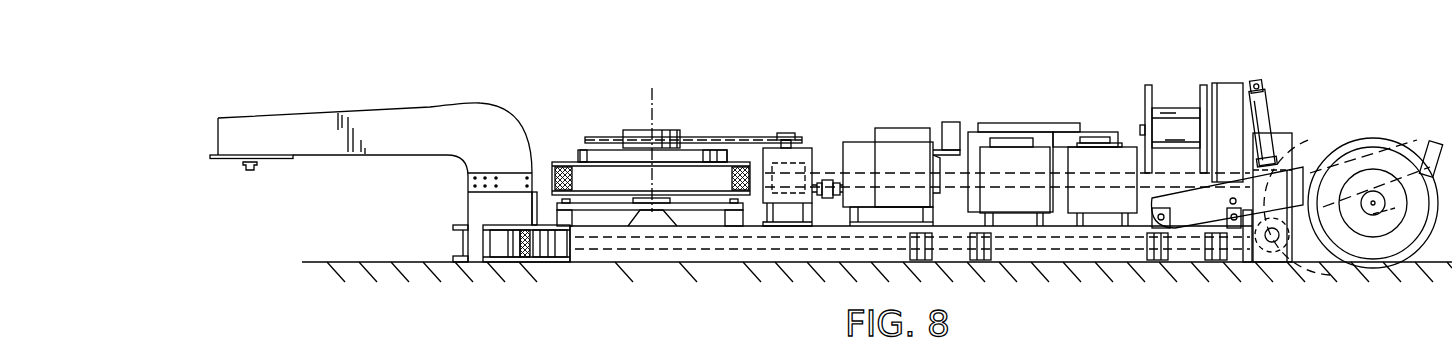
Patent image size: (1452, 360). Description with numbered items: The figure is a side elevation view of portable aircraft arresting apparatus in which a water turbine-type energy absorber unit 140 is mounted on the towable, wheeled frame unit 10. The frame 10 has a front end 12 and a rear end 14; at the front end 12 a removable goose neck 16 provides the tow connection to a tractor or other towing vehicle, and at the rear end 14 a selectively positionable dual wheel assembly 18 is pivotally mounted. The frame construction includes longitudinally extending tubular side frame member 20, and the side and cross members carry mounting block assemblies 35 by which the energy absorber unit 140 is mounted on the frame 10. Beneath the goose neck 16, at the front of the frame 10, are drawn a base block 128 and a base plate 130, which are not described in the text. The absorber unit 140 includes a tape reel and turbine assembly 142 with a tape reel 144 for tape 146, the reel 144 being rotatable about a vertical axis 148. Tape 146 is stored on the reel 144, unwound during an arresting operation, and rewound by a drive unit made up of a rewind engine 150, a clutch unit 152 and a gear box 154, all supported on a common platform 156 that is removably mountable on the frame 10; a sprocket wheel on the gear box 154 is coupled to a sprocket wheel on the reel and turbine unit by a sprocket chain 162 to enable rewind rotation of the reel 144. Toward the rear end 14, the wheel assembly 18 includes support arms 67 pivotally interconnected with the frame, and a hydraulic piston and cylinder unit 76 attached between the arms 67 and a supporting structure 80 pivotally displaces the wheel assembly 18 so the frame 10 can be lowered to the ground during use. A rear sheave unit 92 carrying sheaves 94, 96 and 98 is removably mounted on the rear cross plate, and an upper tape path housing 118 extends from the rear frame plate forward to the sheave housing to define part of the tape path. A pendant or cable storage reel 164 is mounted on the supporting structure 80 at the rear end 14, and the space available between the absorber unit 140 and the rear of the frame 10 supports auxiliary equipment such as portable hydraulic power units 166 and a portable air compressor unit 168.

The towable frame unit 10 is at (911, 164).
The front end 12 is at (523, 107).
The rear end 14 is at (1202, 91).
The goose neck 16 is at (388, 110).
The dual wheel assembly 18 is at (1379, 102).
The side frame member 20 is at (729, 255).
The mounting block assemblies 35 is at (587, 222).
The support arms 67 is at (1422, 150).
The hydraulic piston and cylinder unit 76 is at (1268, 117).
The supporting structure 80 is at (1232, 95).
The rear sheave unit 92 is at (1293, 136).
The sheave 94 is at (1298, 143).
The sheave 96 is at (1330, 274).
The sheave 98 is at (1277, 253).
The upper tape path housing 118 is at (1148, 192).
The base block 128 is at (550, 248).
The base plate 130 is at (503, 250).
The water turbine-type energy absorber unit 140 is at (727, 107).
The tape reel and turbine assembly 142 is at (571, 146).
The tape reel 144 is at (740, 160).
The tape 146 is at (697, 173).
The vertical axis 148 is at (652, 102).
The rewind engine 150 is at (902, 138).
The clutch unit 152 is at (827, 180).
The gear box 154 is at (805, 150).
The common platform 156 is at (839, 222).
The sprocket chain 162 is at (762, 140).
The cable storage reel 164 is at (1176, 97).
The portable hydraulic power units 166 is at (1043, 149).
The portable air compressor unit 168 is at (1028, 119).